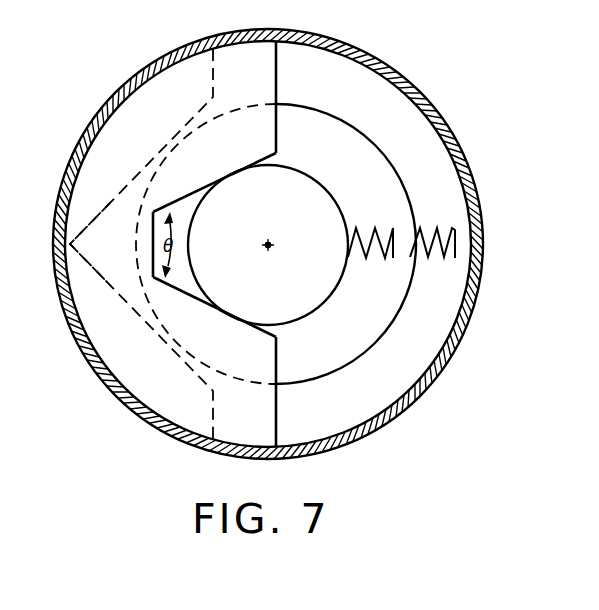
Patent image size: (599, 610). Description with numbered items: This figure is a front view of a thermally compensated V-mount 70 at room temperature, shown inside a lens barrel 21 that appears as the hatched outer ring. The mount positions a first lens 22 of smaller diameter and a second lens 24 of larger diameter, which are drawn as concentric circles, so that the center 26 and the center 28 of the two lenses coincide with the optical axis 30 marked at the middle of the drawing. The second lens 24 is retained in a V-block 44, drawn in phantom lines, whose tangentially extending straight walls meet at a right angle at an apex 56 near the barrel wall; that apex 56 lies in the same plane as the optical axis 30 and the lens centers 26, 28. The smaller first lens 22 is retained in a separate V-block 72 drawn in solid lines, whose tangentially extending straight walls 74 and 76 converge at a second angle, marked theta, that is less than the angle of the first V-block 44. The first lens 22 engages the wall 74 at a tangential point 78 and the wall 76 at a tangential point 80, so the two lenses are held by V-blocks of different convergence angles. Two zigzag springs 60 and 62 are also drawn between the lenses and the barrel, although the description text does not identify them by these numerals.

The lens barrel 21 is at (448, 360).
The first lens 22 is at (292, 182).
The second lens 24 is at (343, 368).
The center of first lens 26 is at (270, 245).
The center of second lens 28 is at (270, 247).
The optical axis 30 is at (266, 246).
The V-block 44 is at (163, 102).
The apex 56 is at (72, 243).
The inner spring 60 is at (366, 258).
The outer spring 62 is at (444, 258).
The thermally compensated V-mount 70 is at (445, 160).
The V-block 72 is at (258, 84).
The tangentially extending straight wall 74 is at (196, 193).
The tangentially extending straight wall 76 is at (196, 297).
The tangential point 78 is at (240, 172).
The tangential point 80 is at (230, 312).